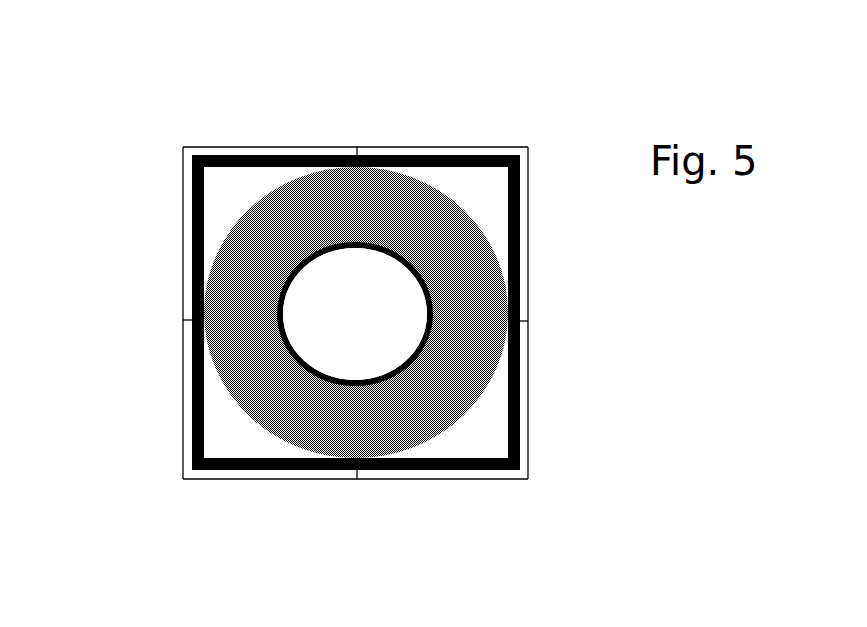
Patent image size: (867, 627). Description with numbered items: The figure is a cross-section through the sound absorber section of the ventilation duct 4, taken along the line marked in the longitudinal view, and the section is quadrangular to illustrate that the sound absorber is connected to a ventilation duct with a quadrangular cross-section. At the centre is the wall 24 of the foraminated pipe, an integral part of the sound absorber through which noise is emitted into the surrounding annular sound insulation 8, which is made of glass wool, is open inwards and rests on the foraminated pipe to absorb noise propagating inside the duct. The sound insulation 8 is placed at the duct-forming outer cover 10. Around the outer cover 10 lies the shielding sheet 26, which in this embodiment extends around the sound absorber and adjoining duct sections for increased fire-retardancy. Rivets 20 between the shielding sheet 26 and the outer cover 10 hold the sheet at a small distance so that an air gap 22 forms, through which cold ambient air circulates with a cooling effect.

The ventilation duct 4 is at (340, 338).
The sound insulation 8 is at (435, 400).
The outer cover 10 is at (520, 393).
The rivets 20 is at (350, 147).
The air gap 22 is at (190, 295).
The wall of foraminated pipe 24 is at (423, 267).
The shielding sheet 26 is at (528, 282).